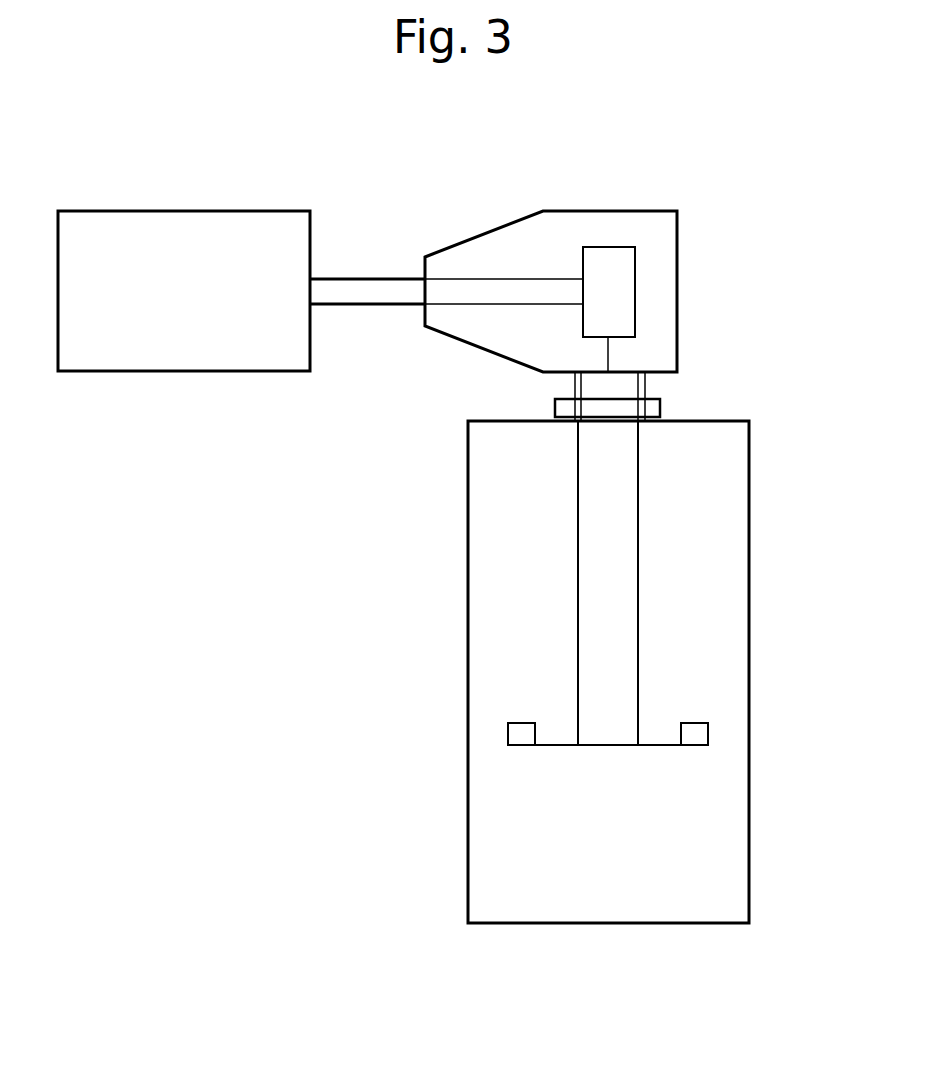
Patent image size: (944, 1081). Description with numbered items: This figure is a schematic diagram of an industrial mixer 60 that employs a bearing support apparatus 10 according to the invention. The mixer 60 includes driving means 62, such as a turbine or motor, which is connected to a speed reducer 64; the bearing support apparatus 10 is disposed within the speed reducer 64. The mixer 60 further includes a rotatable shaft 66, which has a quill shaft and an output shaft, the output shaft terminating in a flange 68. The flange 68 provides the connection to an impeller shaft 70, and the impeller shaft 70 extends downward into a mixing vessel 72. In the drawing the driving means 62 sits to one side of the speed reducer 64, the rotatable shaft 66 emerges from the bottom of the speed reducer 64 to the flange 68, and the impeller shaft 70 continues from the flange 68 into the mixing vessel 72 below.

The bearing support apparatus 10 is at (628, 268).
The industrial mixer 60 is at (760, 312).
The driving means 62 is at (183, 211).
The speed reducer 64 is at (514, 237).
The rotatable shaft 66 is at (645, 390).
The flange 68 is at (662, 407).
The impeller shaft 70 is at (628, 588).
The mixing vessel 72 is at (750, 588).